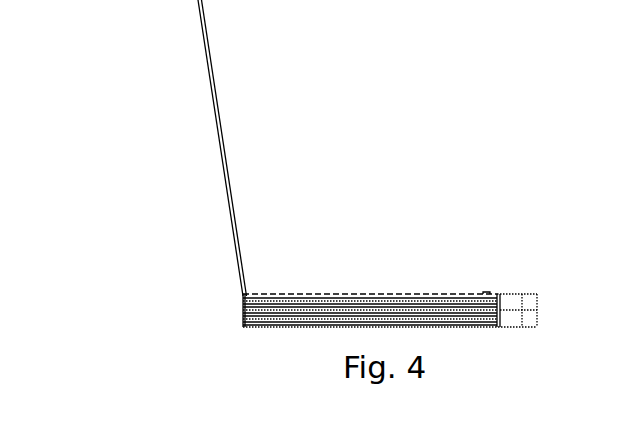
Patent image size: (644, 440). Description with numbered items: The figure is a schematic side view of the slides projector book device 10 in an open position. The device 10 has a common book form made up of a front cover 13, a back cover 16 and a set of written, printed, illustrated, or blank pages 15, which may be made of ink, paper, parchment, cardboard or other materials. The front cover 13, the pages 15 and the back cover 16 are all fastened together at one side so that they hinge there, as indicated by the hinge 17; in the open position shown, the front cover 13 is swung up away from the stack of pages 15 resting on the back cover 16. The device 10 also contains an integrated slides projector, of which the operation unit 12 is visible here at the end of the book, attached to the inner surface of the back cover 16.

The slides projector book device 10 is at (457, 179).
The operation unit 12 is at (532, 302).
The front cover 13 is at (228, 210).
The pages 15 is at (282, 312).
The back cover 16 is at (483, 332).
The hinge 17 is at (243, 303).